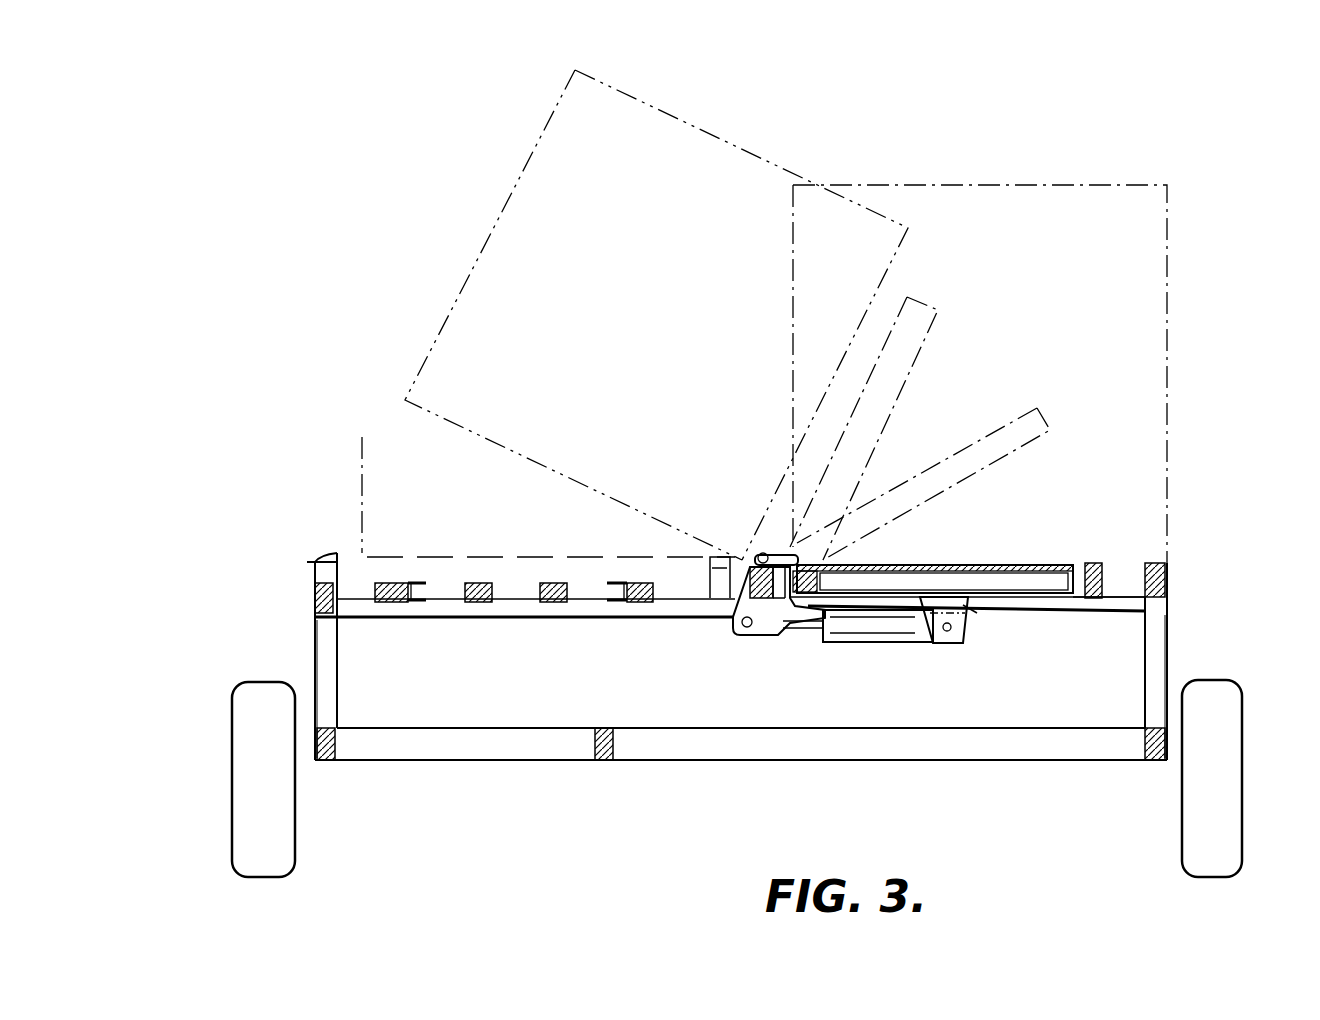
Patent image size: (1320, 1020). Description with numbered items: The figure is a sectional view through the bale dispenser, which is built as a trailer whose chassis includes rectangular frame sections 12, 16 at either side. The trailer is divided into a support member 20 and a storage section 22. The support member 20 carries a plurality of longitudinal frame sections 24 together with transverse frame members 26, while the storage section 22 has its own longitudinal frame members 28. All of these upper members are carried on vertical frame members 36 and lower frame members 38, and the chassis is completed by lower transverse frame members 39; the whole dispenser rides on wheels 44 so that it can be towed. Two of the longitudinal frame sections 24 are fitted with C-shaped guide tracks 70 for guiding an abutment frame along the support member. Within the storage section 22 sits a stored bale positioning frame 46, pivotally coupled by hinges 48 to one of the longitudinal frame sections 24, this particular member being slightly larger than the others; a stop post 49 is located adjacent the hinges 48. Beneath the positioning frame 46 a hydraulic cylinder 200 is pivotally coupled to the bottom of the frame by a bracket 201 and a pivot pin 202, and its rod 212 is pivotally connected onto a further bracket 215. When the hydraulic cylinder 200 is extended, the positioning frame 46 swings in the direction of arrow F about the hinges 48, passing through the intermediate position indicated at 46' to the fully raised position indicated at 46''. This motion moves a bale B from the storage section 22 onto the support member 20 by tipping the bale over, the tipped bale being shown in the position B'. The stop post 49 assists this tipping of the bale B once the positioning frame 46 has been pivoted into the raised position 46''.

The rectangular frame section 12 is at (1165, 583).
The rectangular frame section 16 is at (315, 603).
The support member 20 is at (504, 545).
The storage section 22 is at (1071, 530).
The longitudinal frame sections 24 is at (547, 604).
The transverse frame members 26 is at (657, 607).
The longitudinal frame members 28 is at (1105, 568).
The vertical frame members 36 is at (316, 657).
The lower frame members 38 is at (335, 742).
The lower transverse frame members 39 is at (547, 743).
The wheels 44 is at (258, 730).
The stored bale positioning frame 46 is at (969, 560).
The positioning frame intermediate position 46' is at (923, 461).
The positioning frame raised position 46'' is at (906, 428).
The hinges 48 is at (773, 553).
The stop post 49 is at (702, 570).
The C-shaped guide tracks 70 is at (422, 582).
The hydraulic cylinder 200 is at (880, 624).
The bracket 201 is at (977, 613).
The pivot pin 202 is at (950, 632).
The rod 212 is at (808, 627).
The bracket 215 is at (763, 628).
The bale B is at (980, 332).
The tipped bale position B' is at (656, 315).
The arrow F is at (915, 505).